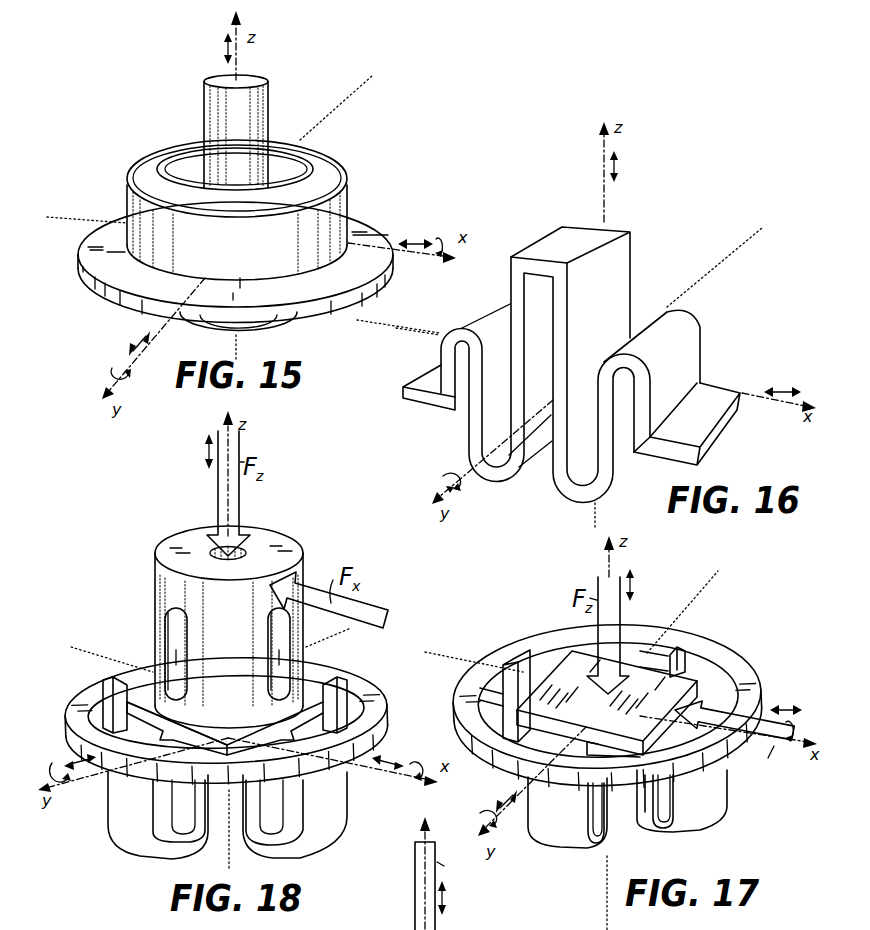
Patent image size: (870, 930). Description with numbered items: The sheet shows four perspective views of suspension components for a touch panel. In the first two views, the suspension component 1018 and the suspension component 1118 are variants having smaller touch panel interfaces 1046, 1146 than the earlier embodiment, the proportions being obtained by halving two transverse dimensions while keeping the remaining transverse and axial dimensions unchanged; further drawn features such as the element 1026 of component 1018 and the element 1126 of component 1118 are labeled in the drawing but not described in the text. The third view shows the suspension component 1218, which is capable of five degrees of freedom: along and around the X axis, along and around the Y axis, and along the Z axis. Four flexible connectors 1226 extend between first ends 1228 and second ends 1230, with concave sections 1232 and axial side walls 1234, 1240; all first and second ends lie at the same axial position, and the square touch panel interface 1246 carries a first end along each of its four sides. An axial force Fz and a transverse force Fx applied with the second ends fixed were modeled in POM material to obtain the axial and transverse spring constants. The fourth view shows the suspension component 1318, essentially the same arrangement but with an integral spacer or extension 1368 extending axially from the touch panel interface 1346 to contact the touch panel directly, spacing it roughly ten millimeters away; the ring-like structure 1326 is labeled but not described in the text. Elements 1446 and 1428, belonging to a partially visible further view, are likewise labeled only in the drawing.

In FIG. 15, the suspension component 1018 is at (296, 107).
In FIG. 15, the ring hub 1026 is at (330, 160).
In FIG. 15, the touch panel interface 1046 is at (213, 77).
In FIG. 16, the suspension component 1118 is at (571, 318).
In FIG. 16, the flexure arm 1126 is at (647, 300).
In FIG. 16, the touch panel interface 1146 is at (575, 240).
In FIG. 18, the suspension component 1318 is at (216, 679).
In FIG. 18, the spacer or extension 1368 is at (168, 594).
In FIG. 18, the ring with hanging flexure loops 1326 is at (140, 848).
In FIG. 18, the touch panel interface 1346 is at (139, 702).
In FIG. 17, the suspension component 1218 is at (620, 726).
In FIG. 17, the touch panel interface 1246 is at (576, 700).
In FIG. 17, the axial side wall 1240 is at (519, 682).
In FIG. 17, the second ends 1230 is at (682, 650).
In FIG. 17, the axial side walls 1234 is at (711, 706).
In FIG. 17, the flexible connectors 1226 is at (559, 826).
In FIG. 17, the first ends 1228 is at (668, 740).
In FIG. 17, the concave sections 1232 is at (694, 822).
In FIG. 18, the shaft 1446 is at (381, 929).
In FIG. 17, the flexure 1428 is at (503, 929).